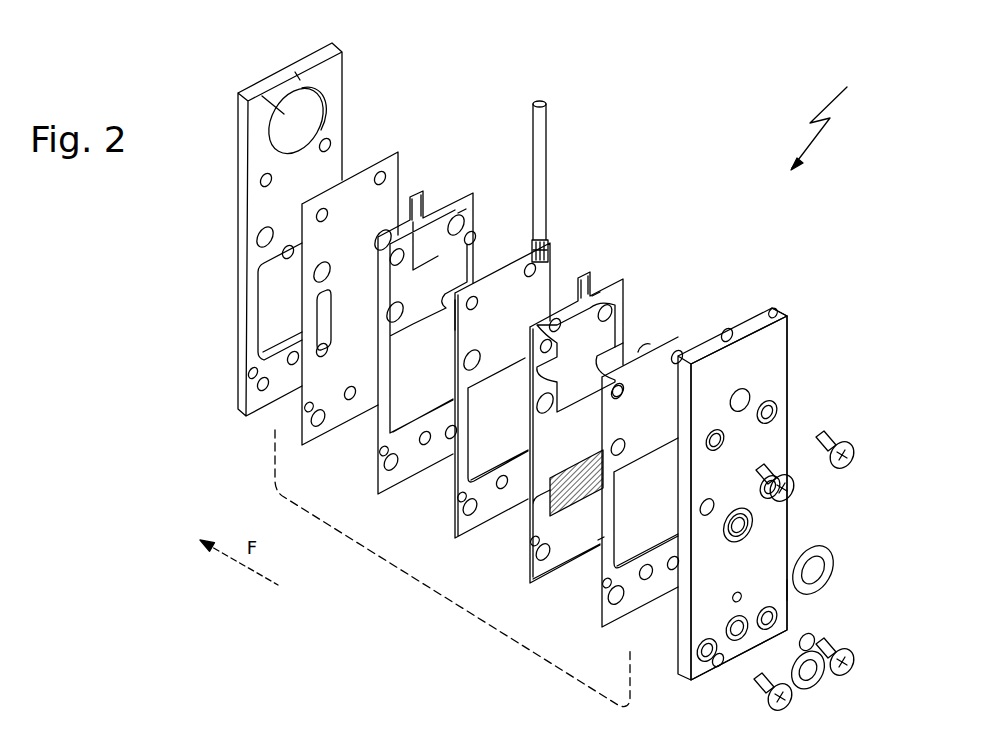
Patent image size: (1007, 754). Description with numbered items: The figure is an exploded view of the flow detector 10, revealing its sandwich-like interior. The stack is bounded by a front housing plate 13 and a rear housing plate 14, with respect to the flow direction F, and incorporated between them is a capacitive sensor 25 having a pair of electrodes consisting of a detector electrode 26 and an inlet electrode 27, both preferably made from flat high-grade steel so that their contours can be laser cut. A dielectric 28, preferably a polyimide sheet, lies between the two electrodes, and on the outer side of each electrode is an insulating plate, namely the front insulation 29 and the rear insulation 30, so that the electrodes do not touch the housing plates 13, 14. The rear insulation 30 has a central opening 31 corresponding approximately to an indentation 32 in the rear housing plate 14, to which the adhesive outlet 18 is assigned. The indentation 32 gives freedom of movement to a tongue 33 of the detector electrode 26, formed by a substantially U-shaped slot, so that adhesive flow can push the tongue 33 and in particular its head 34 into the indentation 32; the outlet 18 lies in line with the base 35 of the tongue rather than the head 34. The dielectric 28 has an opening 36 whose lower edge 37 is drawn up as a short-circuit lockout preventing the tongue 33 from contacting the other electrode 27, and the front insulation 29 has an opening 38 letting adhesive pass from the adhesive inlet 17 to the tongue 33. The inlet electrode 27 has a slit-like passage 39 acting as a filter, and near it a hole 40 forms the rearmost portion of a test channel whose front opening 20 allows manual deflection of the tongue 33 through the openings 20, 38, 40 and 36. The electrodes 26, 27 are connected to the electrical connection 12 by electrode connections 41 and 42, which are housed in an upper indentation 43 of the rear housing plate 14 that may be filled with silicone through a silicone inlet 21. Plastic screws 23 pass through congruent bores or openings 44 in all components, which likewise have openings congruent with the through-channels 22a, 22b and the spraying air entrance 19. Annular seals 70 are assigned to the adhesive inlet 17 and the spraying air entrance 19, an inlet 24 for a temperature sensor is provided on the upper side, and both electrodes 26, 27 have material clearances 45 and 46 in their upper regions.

The flow detector 10 is at (834, 123).
The electrical connection 12 is at (548, 140).
The front housing plate 13 is at (790, 330).
The rear housing plate 14 is at (243, 152).
The adhesive inlet 17 is at (752, 528).
The adhesive outlet 18 is at (257, 283).
The spraying air entrance 19 is at (293, 365).
The opening of test channel 20 is at (782, 590).
The silicone inlet 21 is at (788, 355).
The through-channel 22a is at (252, 240).
The through-channel 22b is at (777, 416).
The screws 23 is at (853, 454).
The inlet for temperature sensor 24 is at (778, 310).
The capacitive sensor 25 is at (420, 597).
The detector electrode 26 is at (462, 210).
The inlet electrode 27 is at (600, 307).
The dielectric 28 is at (550, 238).
The front insulation 29 is at (606, 615).
The rear insulation 30 is at (301, 437).
The central opening 31 is at (333, 405).
The indentation 32 is at (280, 333).
The tongue 33 is at (377, 408).
The head 34 is at (425, 407).
The base of the tongue 35 is at (441, 315).
The opening 36 is at (490, 435).
The edge 37 is at (523, 495).
The opening 38 is at (645, 440).
The passage 39 is at (540, 560).
The hole 40 is at (572, 520).
The electrode connection 41 is at (580, 290).
The electrode connection 42 is at (418, 195).
The upper indentation 43 is at (250, 88).
The bores or openings 44 is at (330, 145).
The material clearance 45 is at (428, 300).
The material clearance 46 is at (586, 268).
The annular seals 70 is at (832, 565).